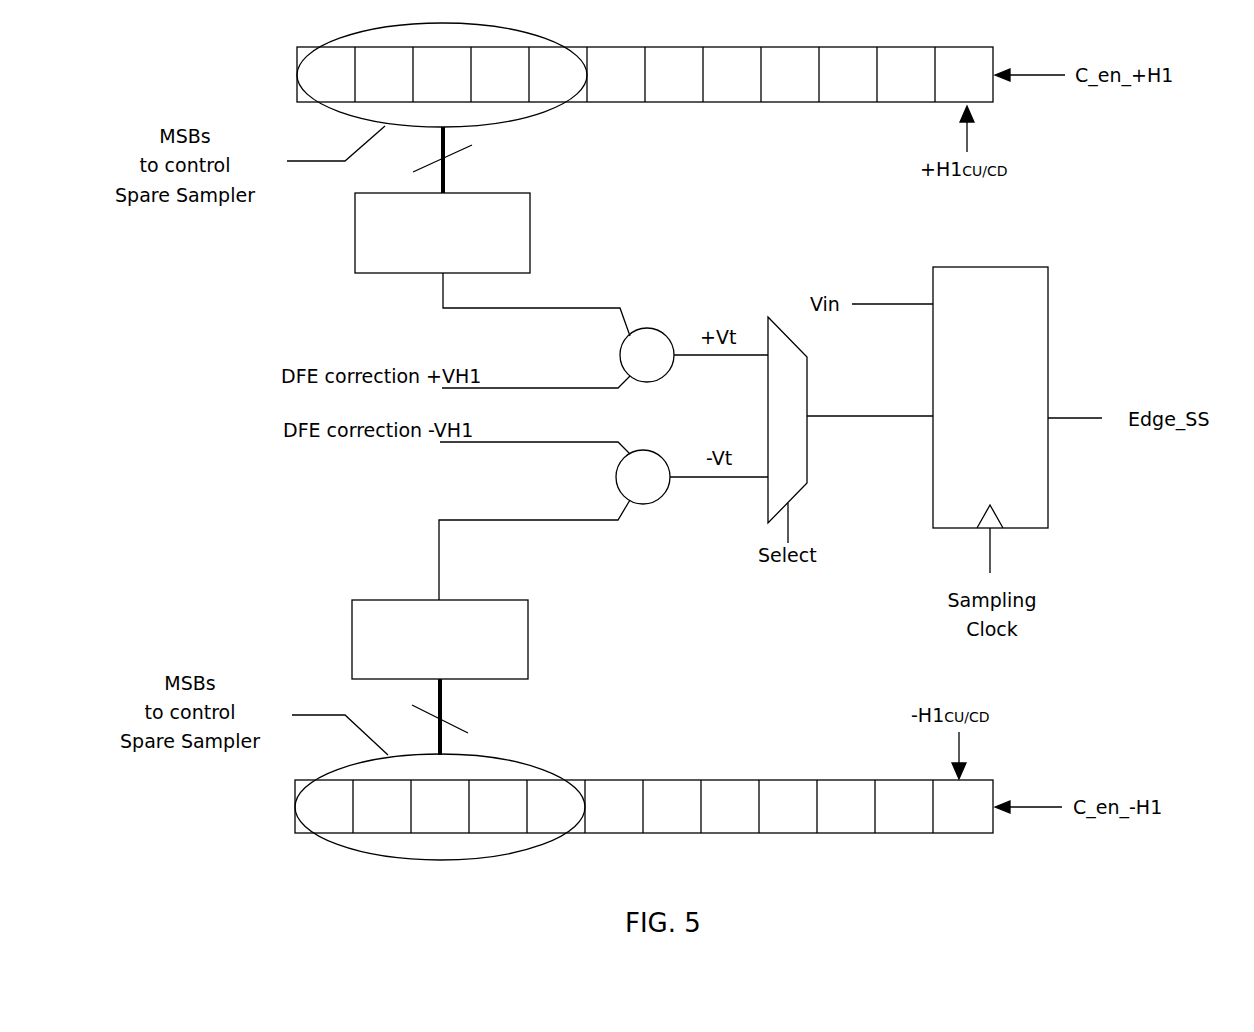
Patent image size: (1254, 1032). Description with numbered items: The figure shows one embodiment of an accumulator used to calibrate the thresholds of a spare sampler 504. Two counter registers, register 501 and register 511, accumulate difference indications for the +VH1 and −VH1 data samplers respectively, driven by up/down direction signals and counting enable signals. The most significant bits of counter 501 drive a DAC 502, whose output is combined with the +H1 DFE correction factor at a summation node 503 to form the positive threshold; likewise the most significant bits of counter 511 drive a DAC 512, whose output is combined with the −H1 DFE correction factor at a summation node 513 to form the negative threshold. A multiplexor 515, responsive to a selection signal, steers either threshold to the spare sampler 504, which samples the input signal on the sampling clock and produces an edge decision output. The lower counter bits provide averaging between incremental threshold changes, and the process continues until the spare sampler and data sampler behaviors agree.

The register 501 is at (297, 48).
The DAC 502 is at (530, 193).
The summation node 503 is at (653, 329).
The spare sampler 504 is at (963, 267).
The register 511 is at (295, 834).
The DAC 512 is at (528, 679).
The summation node 513 is at (650, 503).
The multiplexor 515 is at (807, 457).